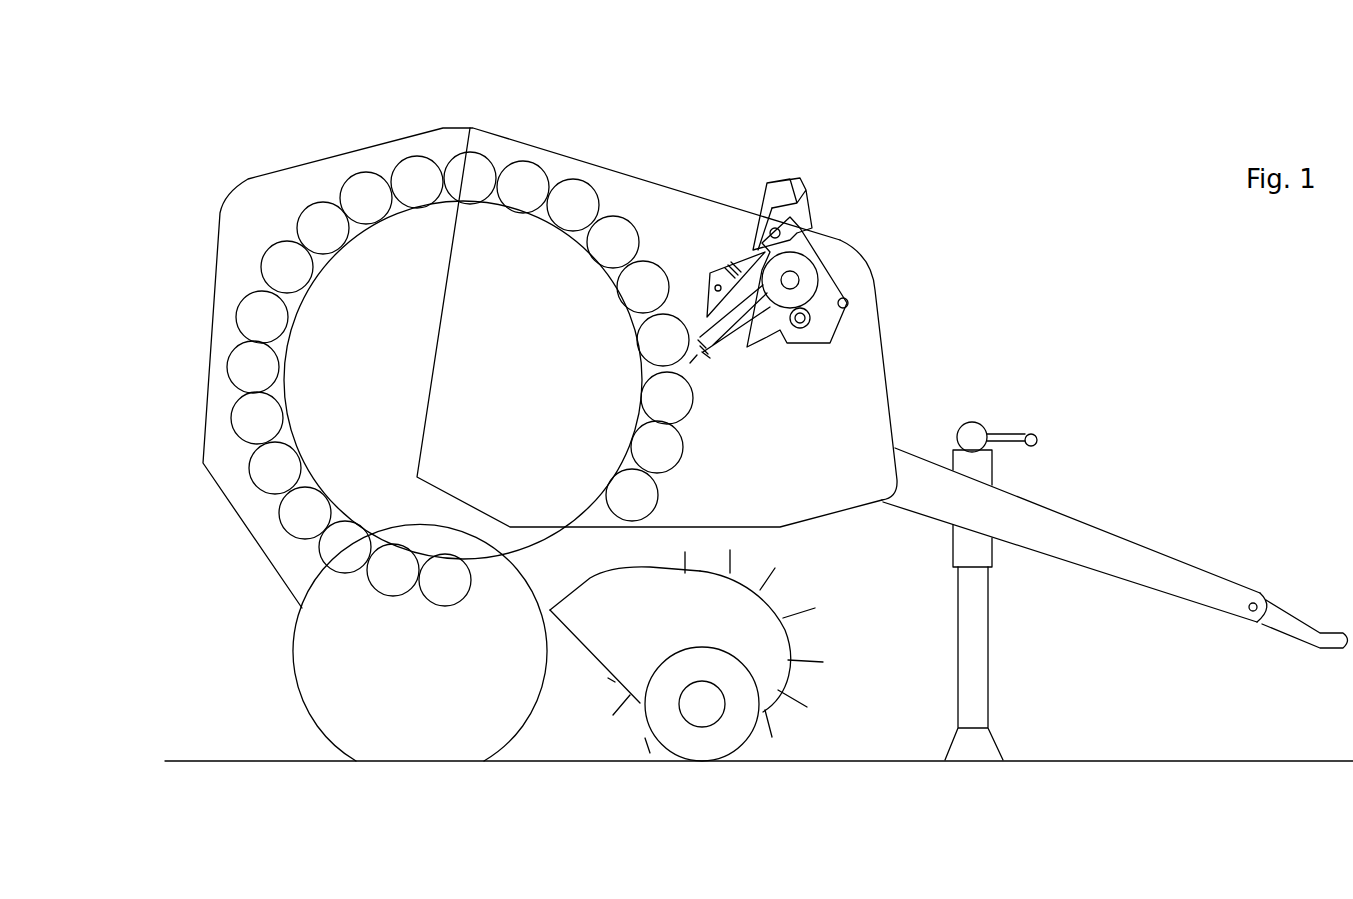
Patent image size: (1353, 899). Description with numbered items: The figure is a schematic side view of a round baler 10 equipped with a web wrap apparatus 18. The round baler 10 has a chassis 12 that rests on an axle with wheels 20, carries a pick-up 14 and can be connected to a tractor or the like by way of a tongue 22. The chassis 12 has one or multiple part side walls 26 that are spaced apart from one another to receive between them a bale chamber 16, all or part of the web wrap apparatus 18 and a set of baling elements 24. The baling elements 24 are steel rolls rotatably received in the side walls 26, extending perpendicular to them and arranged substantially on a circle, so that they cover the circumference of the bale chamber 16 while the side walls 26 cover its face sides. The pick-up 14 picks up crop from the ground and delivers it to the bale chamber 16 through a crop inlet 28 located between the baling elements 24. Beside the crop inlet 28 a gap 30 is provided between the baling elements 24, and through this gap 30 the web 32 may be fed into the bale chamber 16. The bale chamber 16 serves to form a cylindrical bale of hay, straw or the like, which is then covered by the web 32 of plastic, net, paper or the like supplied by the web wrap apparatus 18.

The round baler 10 is at (975, 232).
The chassis 12 is at (234, 234).
The pick-up 14 is at (832, 618).
The bale chamber 16 is at (352, 366).
The web wrap apparatus 18 is at (847, 197).
The axle with wheels 20 is at (537, 737).
The tongue 22 is at (1162, 570).
The baling elements 24 is at (340, 194).
The side walls 26 is at (827, 419).
The crop inlet 28 is at (572, 562).
The gap 30 is at (700, 355).
The web 32 is at (697, 365).